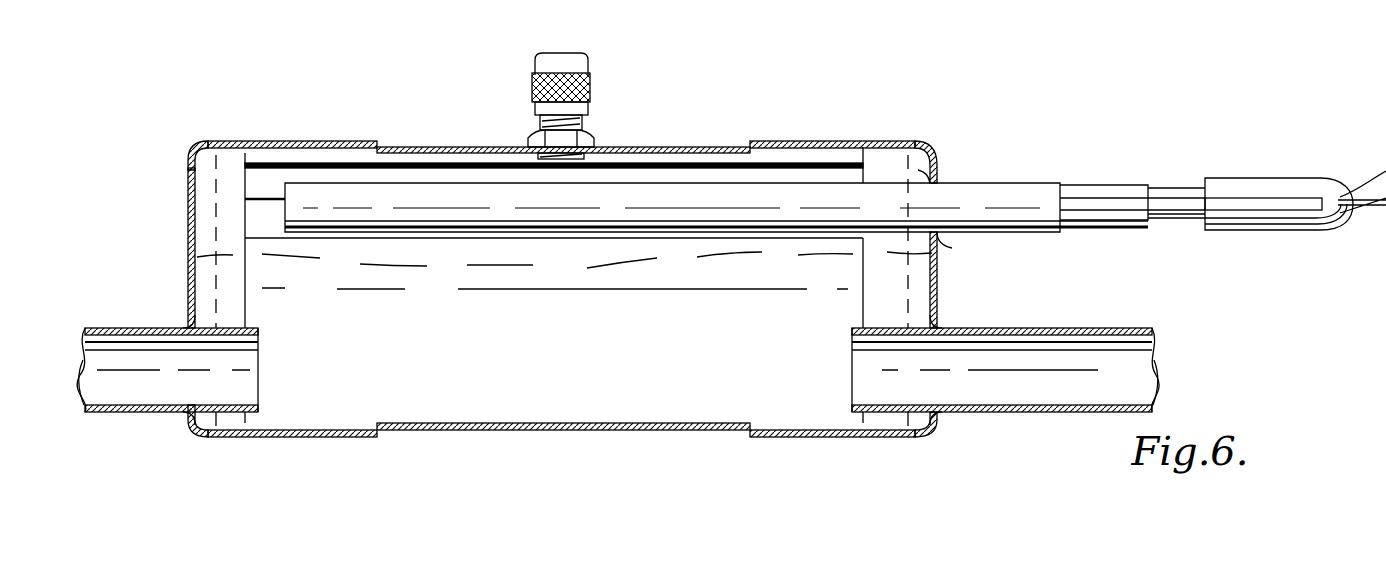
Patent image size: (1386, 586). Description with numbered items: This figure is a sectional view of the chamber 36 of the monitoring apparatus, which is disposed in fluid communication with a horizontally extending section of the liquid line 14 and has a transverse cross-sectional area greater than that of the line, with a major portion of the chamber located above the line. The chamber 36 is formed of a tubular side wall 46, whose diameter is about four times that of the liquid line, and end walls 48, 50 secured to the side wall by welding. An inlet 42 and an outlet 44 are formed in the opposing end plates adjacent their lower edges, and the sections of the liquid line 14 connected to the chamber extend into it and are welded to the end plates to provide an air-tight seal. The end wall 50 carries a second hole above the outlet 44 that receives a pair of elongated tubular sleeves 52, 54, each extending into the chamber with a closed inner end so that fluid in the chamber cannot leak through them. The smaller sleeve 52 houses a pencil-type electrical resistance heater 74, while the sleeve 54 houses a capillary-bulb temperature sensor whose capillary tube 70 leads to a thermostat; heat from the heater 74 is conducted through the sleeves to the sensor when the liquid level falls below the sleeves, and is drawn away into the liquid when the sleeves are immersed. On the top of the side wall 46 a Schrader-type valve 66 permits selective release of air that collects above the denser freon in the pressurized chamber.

The liquid line 14 is at (155, 422).
The chamber 36 is at (475, 136).
The inlet 42 is at (258, 368).
The outlet 44 is at (852, 384).
The tubular side wall 46 is at (476, 425).
The end wall 48 is at (190, 285).
The end wall 50 is at (937, 295).
The tubular sleeve 52 is at (1093, 190).
The tubular sleeve 54 is at (1033, 190).
The valve 66 is at (602, 97).
The capillary tube 70 is at (1356, 207).
The heater 74 is at (1175, 190).